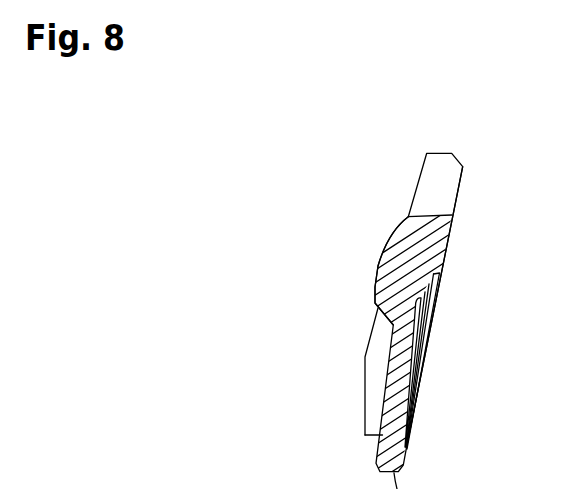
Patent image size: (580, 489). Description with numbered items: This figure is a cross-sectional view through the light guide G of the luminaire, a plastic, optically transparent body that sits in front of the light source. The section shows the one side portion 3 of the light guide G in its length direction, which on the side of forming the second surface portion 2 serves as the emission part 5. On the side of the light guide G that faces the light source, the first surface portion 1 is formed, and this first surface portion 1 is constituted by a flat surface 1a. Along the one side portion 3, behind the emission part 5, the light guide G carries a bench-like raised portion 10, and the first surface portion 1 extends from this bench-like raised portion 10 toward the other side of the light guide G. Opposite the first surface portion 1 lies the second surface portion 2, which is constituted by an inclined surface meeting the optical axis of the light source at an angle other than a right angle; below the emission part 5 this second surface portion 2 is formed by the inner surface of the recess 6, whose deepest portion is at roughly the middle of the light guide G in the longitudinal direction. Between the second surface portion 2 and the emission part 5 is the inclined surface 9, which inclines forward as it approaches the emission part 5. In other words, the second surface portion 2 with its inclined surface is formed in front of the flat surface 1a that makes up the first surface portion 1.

The light guide G is at (475, 150).
The one side portion 3 is at (438, 215).
The bench-like raised portion 10 is at (381, 269).
The emission part 5 is at (446, 247).
The inclined surface 9 is at (426, 303).
The second surface portion 2 is at (421, 376).
The recess 6 is at (412, 409).
The first surface portion 1 is at (385, 401).
The flat surface 1a is at (336, 403).